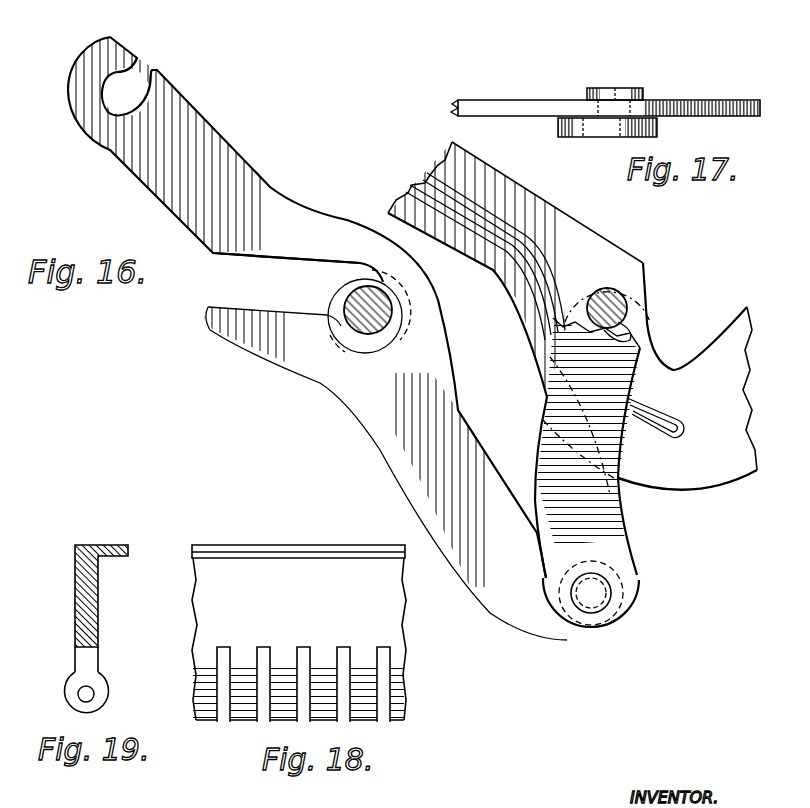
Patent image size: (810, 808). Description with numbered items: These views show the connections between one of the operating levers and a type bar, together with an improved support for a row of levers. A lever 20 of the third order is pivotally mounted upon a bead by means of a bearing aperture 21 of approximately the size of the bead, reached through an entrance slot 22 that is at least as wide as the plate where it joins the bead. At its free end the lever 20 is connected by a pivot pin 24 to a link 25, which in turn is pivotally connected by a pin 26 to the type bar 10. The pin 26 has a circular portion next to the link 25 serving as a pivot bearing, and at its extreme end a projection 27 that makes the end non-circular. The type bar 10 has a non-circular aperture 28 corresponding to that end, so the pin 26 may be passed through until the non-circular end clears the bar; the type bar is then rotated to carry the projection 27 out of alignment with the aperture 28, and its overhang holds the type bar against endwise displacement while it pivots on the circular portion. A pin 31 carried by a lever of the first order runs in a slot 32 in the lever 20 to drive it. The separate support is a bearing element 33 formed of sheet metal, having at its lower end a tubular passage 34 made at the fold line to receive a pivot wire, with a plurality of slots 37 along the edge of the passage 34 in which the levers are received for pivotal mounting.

In FIG. 16, the type bar 10 is at (545, 222).
In FIG. 17, the type bar 10 is at (498, 107).
In FIG. 16, the lever 20 is at (147, 72).
In FIG. 16, the bearing aperture 21 is at (127, 65).
In FIG. 16, the entrance slot 22 is at (153, 68).
In FIG. 16, the pivot pin 24 is at (603, 600).
In FIG. 16, the link 25 is at (607, 487).
In FIG. 17, the link 25 is at (587, 137).
In FIG. 16, the pin 26 is at (612, 293).
In FIG. 17, the pin 26 is at (597, 87).
In FIG. 16, the projection 27 is at (632, 300).
In FIG. 17, the projection 27 is at (635, 87).
In FIG. 16, the non-circular aperture 28 is at (627, 328).
In FIG. 16, the pin 31 is at (392, 330).
In FIG. 16, the slot 32 is at (293, 267).
In FIG. 18, the bearing element 33 is at (390, 608).
In FIG. 19, the bearing element 33 is at (75, 595).
In FIG. 18, the tubular passage 34 is at (405, 700).
In FIG. 19, the tubular passage 34 is at (78, 695).
In FIG. 18, the slots 37 is at (303, 705).
In FIG. 19, the slots 37 is at (98, 660).